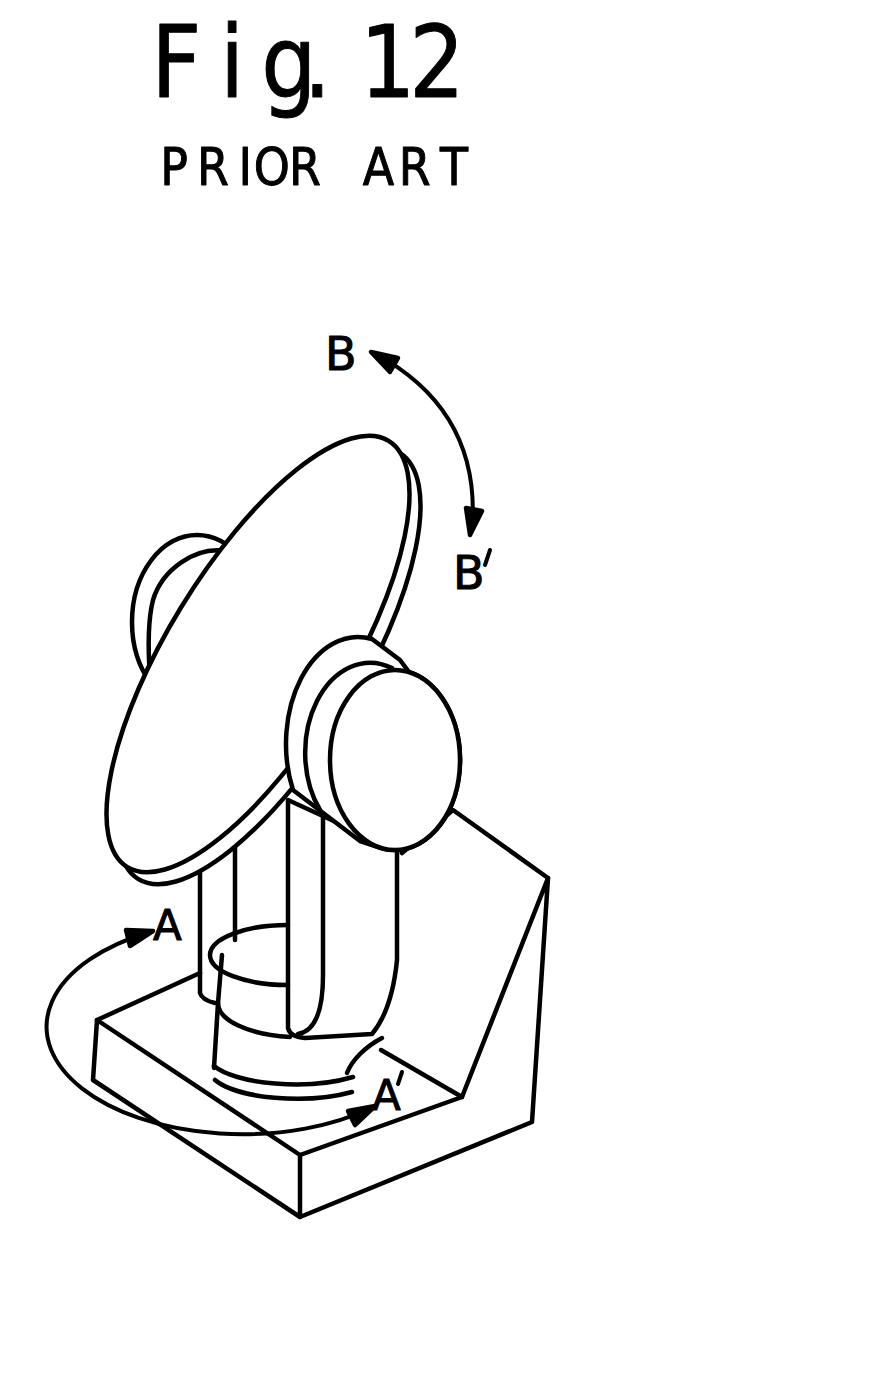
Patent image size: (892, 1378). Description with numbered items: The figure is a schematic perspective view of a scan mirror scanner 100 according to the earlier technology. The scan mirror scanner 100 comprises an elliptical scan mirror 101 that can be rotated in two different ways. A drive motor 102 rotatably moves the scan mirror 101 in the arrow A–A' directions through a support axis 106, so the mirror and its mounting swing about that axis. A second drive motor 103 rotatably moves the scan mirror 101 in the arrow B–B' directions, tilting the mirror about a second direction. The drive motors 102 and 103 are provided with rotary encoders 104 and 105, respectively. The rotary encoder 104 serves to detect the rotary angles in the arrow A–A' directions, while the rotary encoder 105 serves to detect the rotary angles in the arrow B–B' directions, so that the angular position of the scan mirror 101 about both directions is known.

The scan mirror scanner 100 is at (583, 465).
The elliptical scan mirror 101 is at (296, 514).
The drive motor 102 is at (320, 1058).
The drive motor 103 is at (403, 748).
The rotary encoder 104 is at (381, 1040).
The rotary encoder 105 is at (407, 660).
The support axis 106 is at (362, 920).